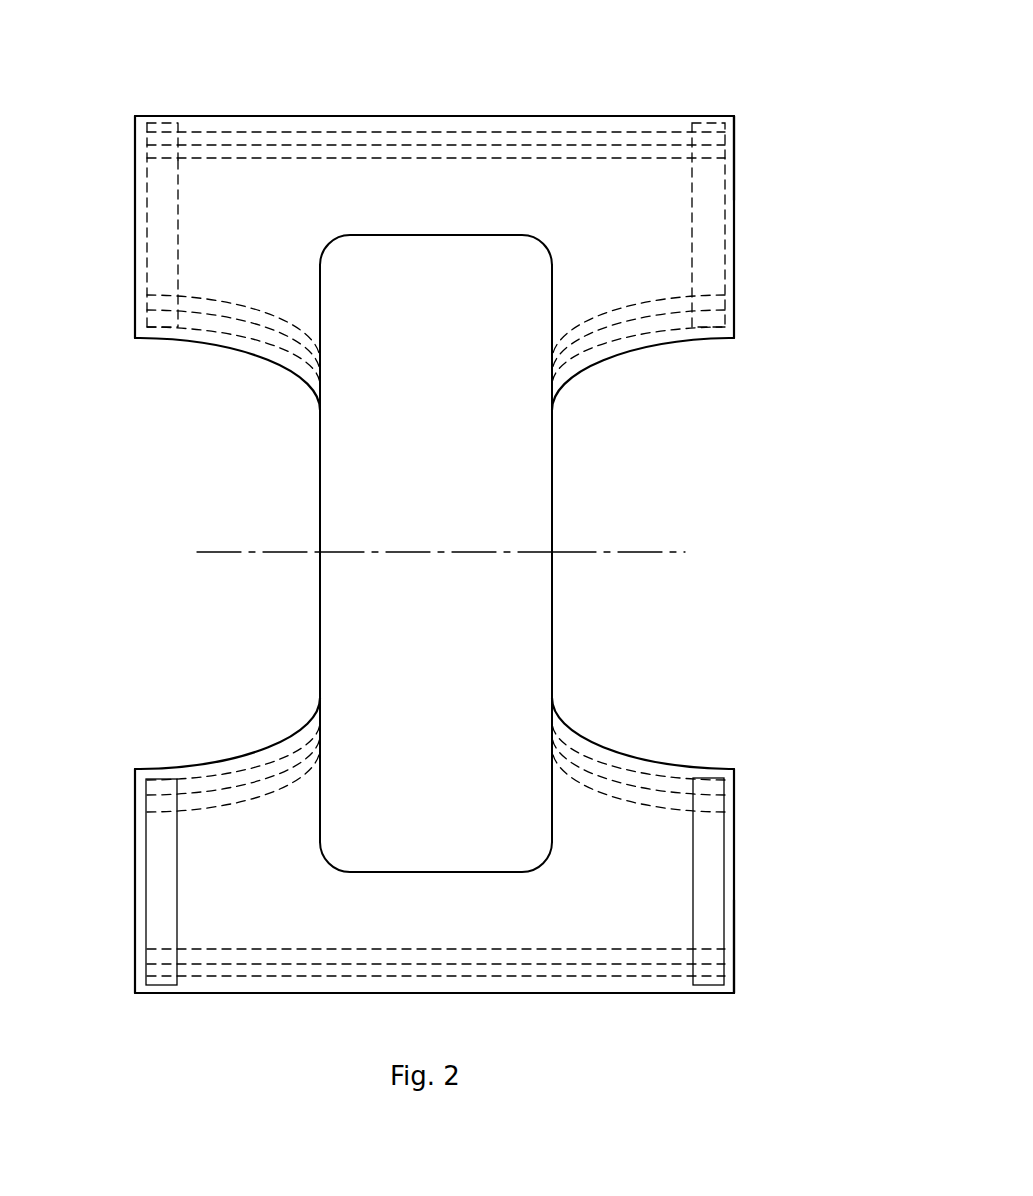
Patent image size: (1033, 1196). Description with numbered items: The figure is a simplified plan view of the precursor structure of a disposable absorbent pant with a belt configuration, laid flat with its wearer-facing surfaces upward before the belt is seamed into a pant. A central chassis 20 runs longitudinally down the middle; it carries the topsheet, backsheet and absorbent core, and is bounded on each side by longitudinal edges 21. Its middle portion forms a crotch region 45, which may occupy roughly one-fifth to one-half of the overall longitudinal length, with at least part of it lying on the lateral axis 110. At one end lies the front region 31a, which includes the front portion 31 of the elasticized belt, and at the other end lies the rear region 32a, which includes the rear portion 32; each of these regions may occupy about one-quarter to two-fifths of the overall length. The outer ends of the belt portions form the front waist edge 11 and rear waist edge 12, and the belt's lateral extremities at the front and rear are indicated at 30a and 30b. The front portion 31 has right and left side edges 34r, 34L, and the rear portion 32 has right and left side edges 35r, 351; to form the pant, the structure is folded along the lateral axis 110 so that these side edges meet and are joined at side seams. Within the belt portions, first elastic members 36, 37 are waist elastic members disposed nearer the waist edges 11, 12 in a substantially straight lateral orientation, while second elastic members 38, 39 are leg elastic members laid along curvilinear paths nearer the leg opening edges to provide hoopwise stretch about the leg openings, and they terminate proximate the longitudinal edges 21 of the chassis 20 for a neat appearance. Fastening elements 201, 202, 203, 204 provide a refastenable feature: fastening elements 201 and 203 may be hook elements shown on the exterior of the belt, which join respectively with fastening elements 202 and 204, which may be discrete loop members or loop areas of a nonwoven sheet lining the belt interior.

The front waist edge 11 is at (570, 993).
The rear waist edge 12 is at (300, 116).
The central chassis 20 is at (445, 553).
The longitudinal edges of chassis 21 is at (320, 613).
The rear waist portion edge 30a is at (660, 993).
The front waist portion edge 30b is at (680, 116).
The front portion 31 is at (630, 887).
The front region 31a is at (376, 865).
The rear portion 32 is at (643, 231).
The rear region 32a is at (378, 286).
The right side edge of front portion 34r is at (135, 908).
The left side edge of front portion 34L is at (734, 893).
The right side edge of rear portion 35r is at (135, 218).
The left side edge of rear portion 351 is at (734, 215).
The first elastic member 36 is at (200, 950).
The first elastic member 37 is at (182, 128).
The second elastic member 38 is at (182, 778).
The second elastic member 39 is at (212, 322).
The crotch region 45 is at (370, 544).
The lateral axis 110 is at (662, 552).
The fastening element 201 is at (725, 268).
The fastening element 202 is at (724, 832).
The fastening element 203 is at (145, 277).
The fastening element 204 is at (147, 855).